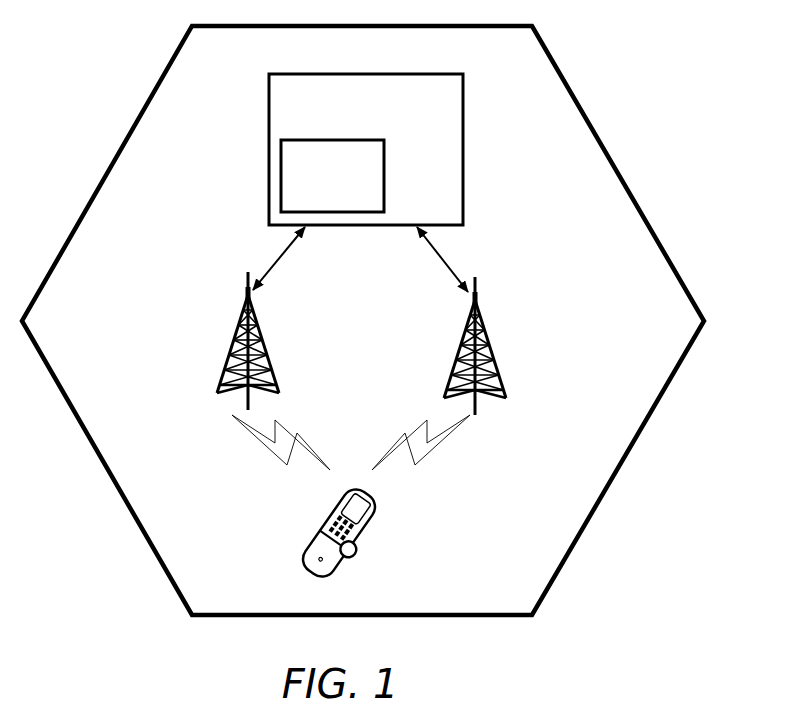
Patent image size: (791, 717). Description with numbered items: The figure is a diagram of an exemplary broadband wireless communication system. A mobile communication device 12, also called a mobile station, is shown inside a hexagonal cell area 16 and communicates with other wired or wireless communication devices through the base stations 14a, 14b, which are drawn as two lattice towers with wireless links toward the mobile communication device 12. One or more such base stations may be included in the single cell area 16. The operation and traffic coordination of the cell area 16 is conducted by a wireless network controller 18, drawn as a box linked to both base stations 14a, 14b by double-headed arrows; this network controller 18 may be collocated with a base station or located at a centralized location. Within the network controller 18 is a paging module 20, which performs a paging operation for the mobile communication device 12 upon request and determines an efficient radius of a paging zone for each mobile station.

The mobile communication device 12 is at (355, 562).
The base station 14a is at (262, 328).
The base station 14b is at (485, 335).
The cell area 16 is at (704, 321).
The wireless network controller 18 is at (463, 150).
The paging module 20 is at (385, 175).